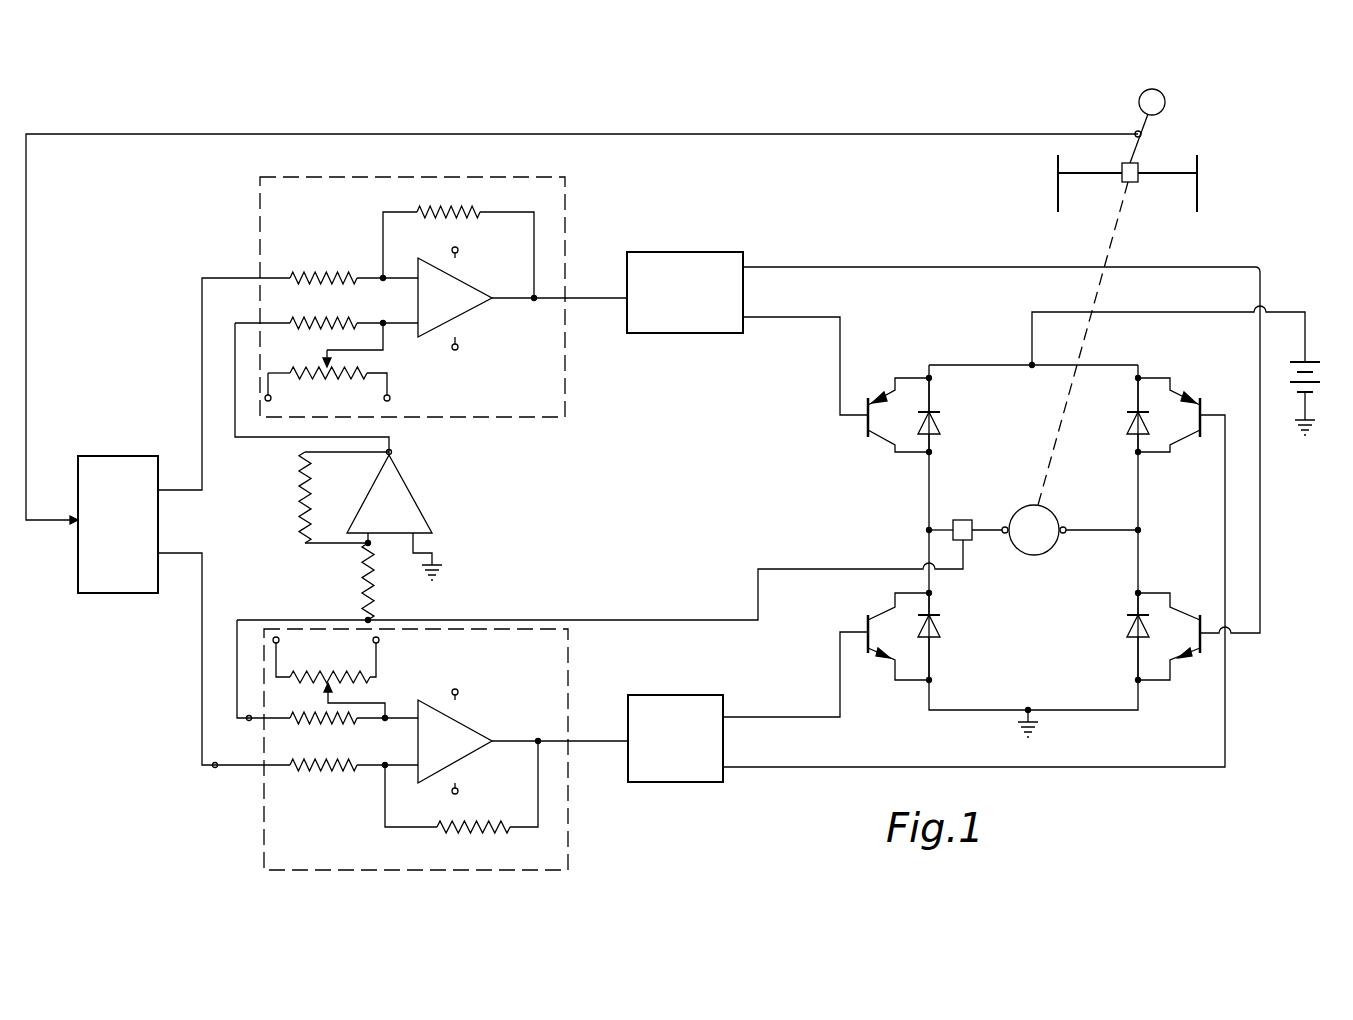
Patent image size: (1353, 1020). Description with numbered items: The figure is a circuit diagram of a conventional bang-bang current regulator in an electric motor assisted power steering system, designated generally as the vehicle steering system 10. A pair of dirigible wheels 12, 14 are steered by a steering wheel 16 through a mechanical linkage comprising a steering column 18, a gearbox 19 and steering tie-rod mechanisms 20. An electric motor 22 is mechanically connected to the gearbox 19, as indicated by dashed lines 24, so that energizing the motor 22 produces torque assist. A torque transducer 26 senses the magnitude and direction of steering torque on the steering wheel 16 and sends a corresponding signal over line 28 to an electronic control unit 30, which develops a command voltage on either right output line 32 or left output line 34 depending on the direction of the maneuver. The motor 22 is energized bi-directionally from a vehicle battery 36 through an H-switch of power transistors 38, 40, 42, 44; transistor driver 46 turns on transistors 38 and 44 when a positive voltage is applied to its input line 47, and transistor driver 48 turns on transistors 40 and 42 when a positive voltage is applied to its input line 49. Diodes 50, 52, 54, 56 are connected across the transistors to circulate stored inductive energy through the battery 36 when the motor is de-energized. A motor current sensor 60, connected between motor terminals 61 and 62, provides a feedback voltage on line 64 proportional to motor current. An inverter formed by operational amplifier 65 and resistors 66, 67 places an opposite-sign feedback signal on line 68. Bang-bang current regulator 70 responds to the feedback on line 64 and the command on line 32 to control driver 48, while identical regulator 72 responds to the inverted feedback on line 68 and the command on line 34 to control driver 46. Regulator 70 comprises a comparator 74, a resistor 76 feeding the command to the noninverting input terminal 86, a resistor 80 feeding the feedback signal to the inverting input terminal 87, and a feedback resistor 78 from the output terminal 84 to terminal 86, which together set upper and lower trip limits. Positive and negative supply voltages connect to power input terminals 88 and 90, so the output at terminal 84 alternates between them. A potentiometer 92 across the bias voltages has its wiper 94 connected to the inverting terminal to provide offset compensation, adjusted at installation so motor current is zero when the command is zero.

The vehicle steering system 10 is at (1238, 142).
The dirigible wheel 12 is at (1058, 195).
The dirigible wheel 14 is at (1197, 195).
The steering wheel 16 is at (1162, 95).
The steering column 18 is at (1140, 150).
The gearbox 19 is at (1125, 181).
The steering tie-rod mechanisms 20 is at (1105, 172).
The electric motor 22 is at (1020, 552).
The dashed lines 24 is at (1100, 233).
The torque transducer 26 is at (1135, 133).
The line 28 is at (515, 134).
The electronic control unit 30 is at (150, 456).
The right output line 32 is at (192, 548).
The left output line 34 is at (180, 490).
The vehicle battery 36 is at (1305, 362).
The power transistor 38 is at (868, 410).
The power transistor 40 is at (868, 630).
The power transistor 42 is at (1205, 400).
The power transistor 44 is at (1203, 640).
The transistor driver 46 is at (725, 333).
The input line 47 is at (607, 298).
The transistor driver 48 is at (660, 783).
The input line 49 is at (598, 741).
The diode 50 is at (940, 427).
The diode 52 is at (945, 625).
The diode 54 is at (1122, 420).
The diode 56 is at (1130, 625).
The motor current sensor 60 is at (968, 520).
The motor terminal 61 is at (1140, 530).
The motor terminal 62 is at (929, 530).
The line 64 is at (612, 620).
The operational amplifier 65 is at (415, 510).
The resistor 66 is at (305, 493).
The resistor 67 is at (365, 570).
The line 68 is at (248, 440).
The bang-bang current regulator 70 is at (505, 620).
The bang-bang current regulator 72 is at (478, 418).
The comparator 74 is at (465, 725).
The resistor 76 is at (335, 765).
The feedback resistor 78 is at (455, 828).
The resistor 80 is at (325, 718).
The comparator output terminal 84 is at (538, 741).
The noninverting input terminal 86 is at (385, 768).
The inverting input terminal 87 is at (385, 722).
The power input terminal 88 is at (458, 692).
The power input terminal 90 is at (458, 786).
The potentiometer 92 is at (320, 685).
The wiper 94 is at (365, 700).